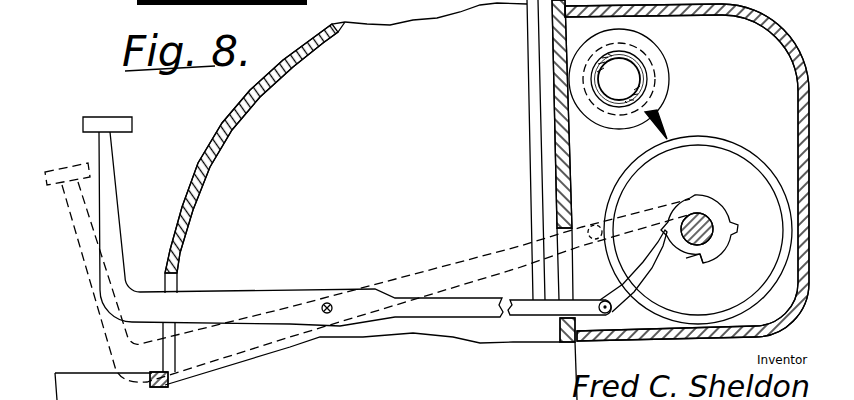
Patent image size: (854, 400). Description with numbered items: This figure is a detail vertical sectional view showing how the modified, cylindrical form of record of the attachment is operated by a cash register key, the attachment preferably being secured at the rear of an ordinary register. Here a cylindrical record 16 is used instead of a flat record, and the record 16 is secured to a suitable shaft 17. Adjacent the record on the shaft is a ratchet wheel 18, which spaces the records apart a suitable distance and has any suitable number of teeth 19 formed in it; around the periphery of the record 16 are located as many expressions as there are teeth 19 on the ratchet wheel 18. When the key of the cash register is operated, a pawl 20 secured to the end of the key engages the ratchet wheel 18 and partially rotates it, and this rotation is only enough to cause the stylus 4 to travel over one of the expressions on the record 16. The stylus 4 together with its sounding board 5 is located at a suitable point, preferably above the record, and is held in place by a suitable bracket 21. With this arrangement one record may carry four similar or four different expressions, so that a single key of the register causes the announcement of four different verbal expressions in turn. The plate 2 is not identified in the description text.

The frame plate 2 is at (530, 161).
The bracket 21 is at (570, 150).
The sounding board 5 is at (668, 61).
The stylus 4 is at (661, 118).
The cylindrical record 16 is at (748, 153).
The ratchet wheel 18 is at (717, 210).
The teeth 19 is at (736, 229).
The pawl 20 is at (637, 272).
The shaft 17 is at (694, 244).